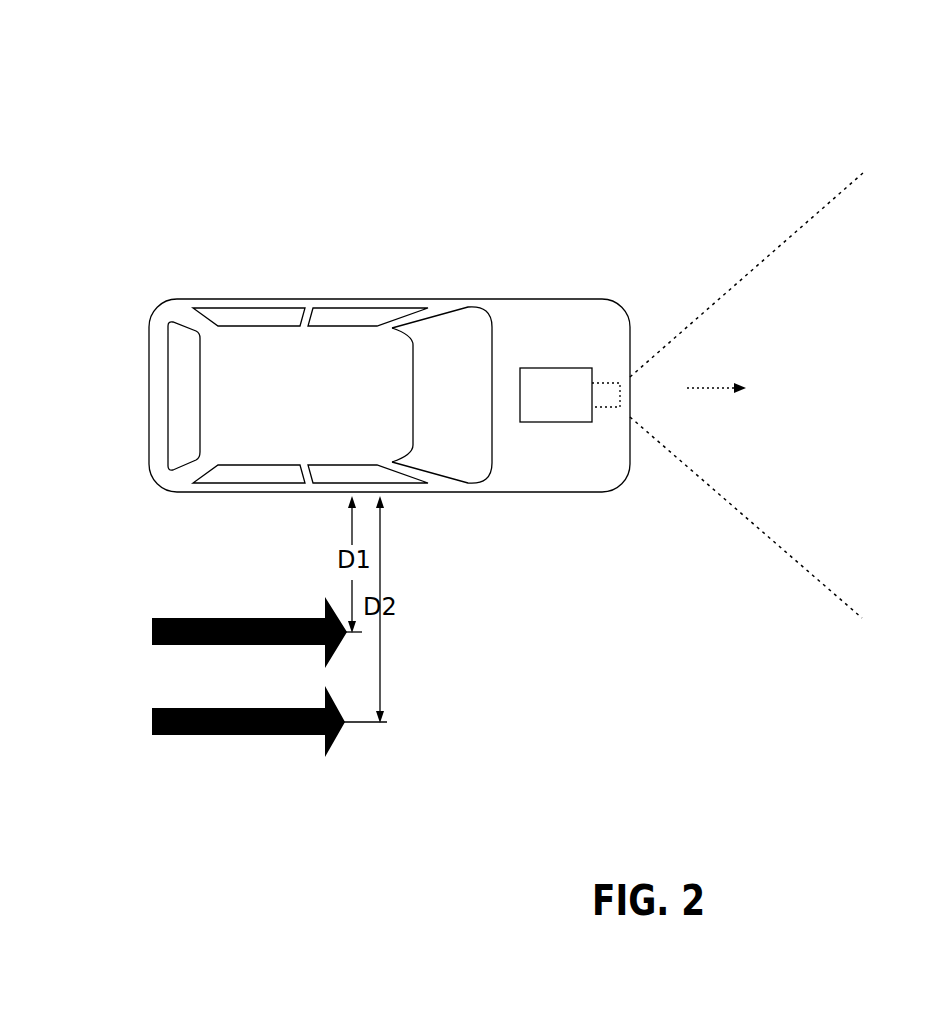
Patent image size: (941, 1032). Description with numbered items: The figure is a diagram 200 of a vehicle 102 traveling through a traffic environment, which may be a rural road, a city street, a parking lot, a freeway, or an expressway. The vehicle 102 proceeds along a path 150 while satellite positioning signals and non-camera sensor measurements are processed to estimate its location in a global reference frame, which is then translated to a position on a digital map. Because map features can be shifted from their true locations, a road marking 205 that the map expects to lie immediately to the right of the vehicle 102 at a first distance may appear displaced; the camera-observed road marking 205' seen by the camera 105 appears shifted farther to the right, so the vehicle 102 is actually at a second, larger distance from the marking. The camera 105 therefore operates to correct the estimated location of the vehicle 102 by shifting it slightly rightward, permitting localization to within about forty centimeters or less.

The diagram 200 is at (158, 58).
The vehicle 102 is at (328, 406).
The camera 105 is at (578, 406).
The path 150 is at (728, 421).
The road marking 205 is at (212, 614).
The camera-observed road marking 205' is at (211, 705).